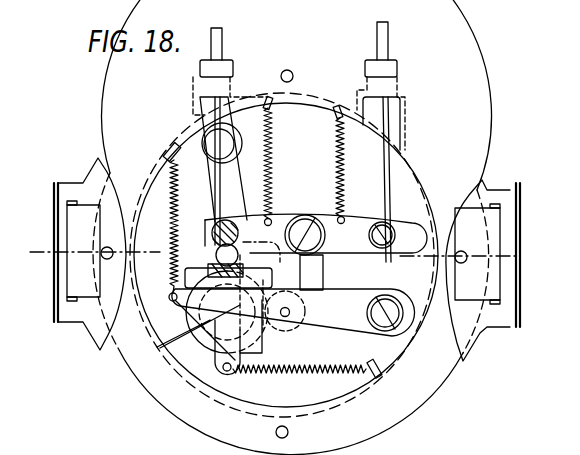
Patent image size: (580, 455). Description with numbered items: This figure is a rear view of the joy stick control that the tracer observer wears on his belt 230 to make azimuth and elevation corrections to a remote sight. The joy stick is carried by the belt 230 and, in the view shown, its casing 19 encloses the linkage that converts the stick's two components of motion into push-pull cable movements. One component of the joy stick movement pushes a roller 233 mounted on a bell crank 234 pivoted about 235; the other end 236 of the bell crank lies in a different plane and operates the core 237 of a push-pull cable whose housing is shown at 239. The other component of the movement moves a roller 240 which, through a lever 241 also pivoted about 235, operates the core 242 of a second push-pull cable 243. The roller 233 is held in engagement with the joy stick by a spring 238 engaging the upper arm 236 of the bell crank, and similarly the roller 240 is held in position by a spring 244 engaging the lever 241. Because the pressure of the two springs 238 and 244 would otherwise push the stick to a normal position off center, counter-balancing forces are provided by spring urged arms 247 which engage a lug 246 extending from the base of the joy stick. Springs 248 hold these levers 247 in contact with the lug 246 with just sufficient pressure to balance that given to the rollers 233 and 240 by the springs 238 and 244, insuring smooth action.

The casing 19 is at (517, 180).
The belt 230 is at (53, 295).
The roller 233 is at (288, 324).
The bell crank 234 is at (324, 272).
The pivot 235 is at (322, 205).
The upper arm of bell crank 236 is at (275, 212).
The core of push-pull cable 237 is at (226, 124).
The spring 238 is at (273, 162).
The housing of push-pull cable 239 is at (221, 38).
The roller 240 is at (255, 250).
The lever 241 is at (357, 222).
The core of push-pull cable 242 is at (389, 199).
The push-pull cable 243 is at (388, 37).
The spring 244 is at (343, 177).
The lug 246 is at (214, 271).
The spring urged arms 247 is at (158, 347).
The springs 248 is at (170, 227).